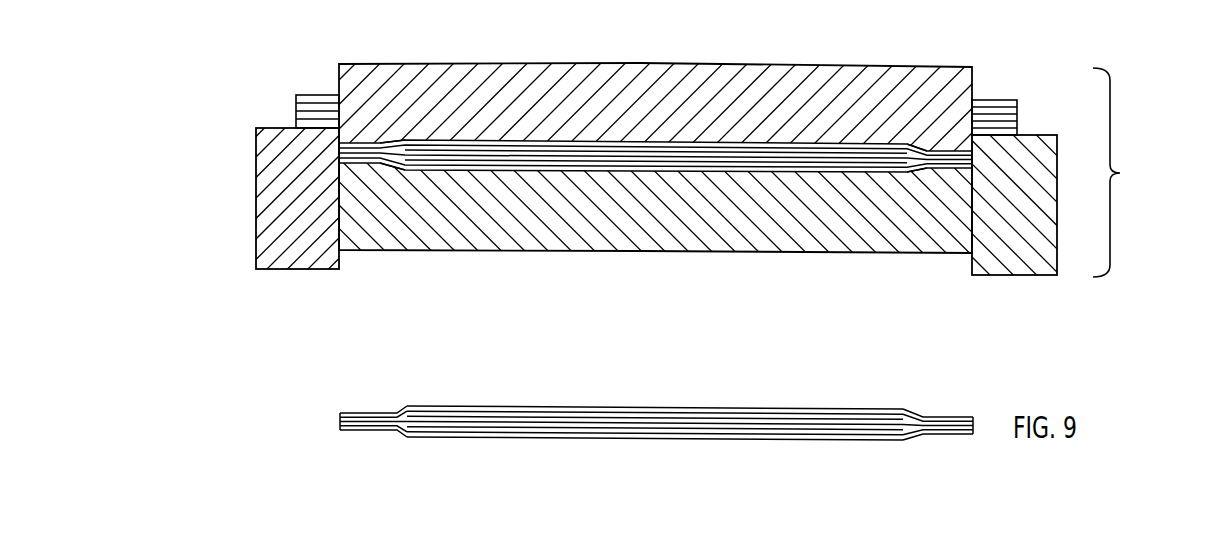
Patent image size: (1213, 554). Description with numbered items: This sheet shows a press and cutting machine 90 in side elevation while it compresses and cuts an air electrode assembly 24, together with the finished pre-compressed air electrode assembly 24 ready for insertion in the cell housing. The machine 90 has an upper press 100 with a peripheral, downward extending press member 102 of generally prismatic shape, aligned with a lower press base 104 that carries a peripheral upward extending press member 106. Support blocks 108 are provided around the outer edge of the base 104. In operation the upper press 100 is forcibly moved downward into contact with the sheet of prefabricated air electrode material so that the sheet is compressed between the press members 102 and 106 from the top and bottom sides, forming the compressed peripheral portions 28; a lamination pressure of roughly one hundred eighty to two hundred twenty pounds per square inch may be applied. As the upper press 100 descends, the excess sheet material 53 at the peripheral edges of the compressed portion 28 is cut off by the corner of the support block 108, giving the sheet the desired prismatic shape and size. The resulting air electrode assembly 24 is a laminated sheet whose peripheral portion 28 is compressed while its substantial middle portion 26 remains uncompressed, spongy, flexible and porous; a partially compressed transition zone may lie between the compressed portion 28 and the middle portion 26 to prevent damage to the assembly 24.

In FIG. 8, the press and cutting machine 90 is at (1049, 59).
In FIG. 8, the upper press 100 is at (973, 80).
In FIG. 8, the lower press base 104 is at (481, 140).
In FIG. 8, the downward extending press member 102 is at (375, 165).
In FIG. 8, the upward extending press member 106 is at (341, 138).
In FIG. 8, the air electrode assembly 24 is at (763, 140).
In FIG. 9, the air electrode assembly 24 is at (656, 387).
In FIG. 9, the middle portion 26 is at (812, 407).
In FIG. 9, the peripheral compressed portion 28 is at (370, 414).
In FIG. 8, the excess sheet material 53 is at (312, 95).
In FIG. 8, the support blocks 108 is at (256, 228).